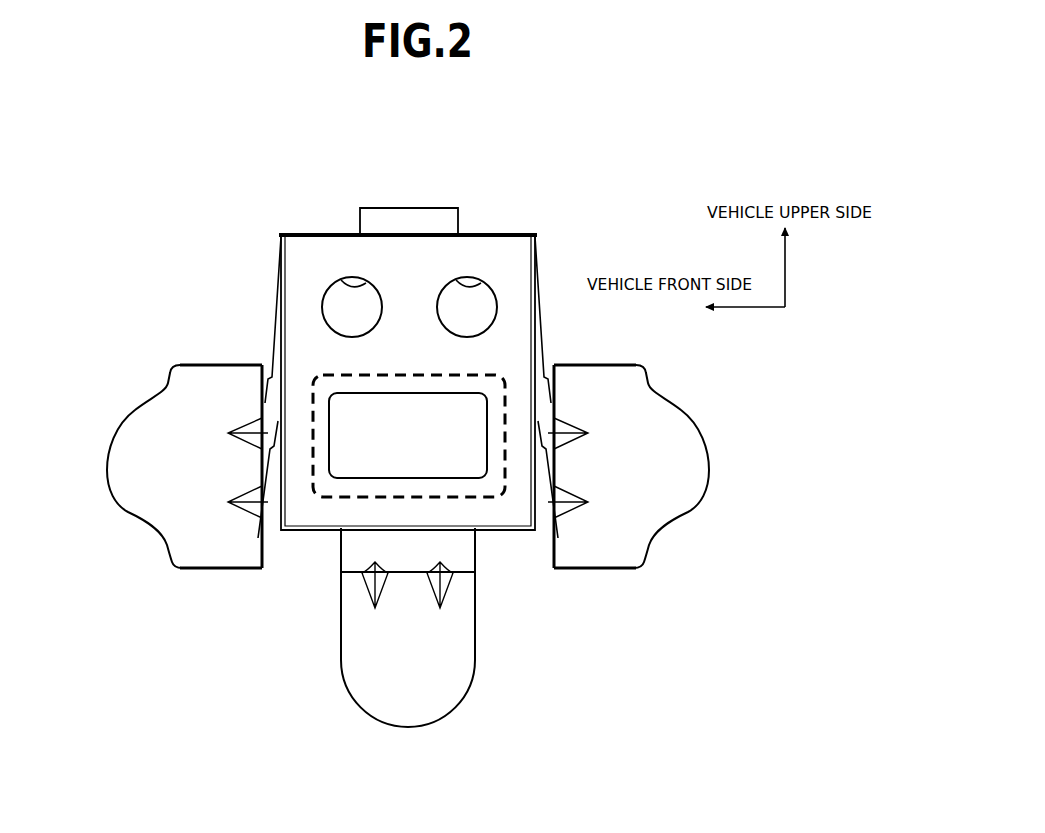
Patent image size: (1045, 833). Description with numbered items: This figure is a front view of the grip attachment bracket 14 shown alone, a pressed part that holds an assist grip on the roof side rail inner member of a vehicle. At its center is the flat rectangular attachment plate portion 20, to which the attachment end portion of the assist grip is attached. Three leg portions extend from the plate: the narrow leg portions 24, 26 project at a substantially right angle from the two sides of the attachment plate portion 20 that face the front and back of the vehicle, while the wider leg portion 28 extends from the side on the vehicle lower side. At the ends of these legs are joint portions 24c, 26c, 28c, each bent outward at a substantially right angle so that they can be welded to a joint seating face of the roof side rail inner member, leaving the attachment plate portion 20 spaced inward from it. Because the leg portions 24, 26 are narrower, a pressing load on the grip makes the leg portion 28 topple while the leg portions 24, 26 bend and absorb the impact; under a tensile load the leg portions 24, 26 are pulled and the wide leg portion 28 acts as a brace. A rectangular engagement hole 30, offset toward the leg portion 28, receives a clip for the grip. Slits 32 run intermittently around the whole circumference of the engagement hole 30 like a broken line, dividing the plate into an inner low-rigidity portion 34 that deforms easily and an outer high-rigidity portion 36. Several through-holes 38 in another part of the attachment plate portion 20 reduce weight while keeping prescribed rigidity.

The grip attachment bracket 14 is at (176, 228).
The attachment plate portion 20 is at (297, 266).
The leg portion 24 is at (263, 411).
The joint portion 24c is at (143, 492).
The leg portion 26 is at (540, 401).
The joint portion 26c is at (660, 505).
The leg portion 28 is at (363, 550).
The joint portion 28c is at (445, 663).
The engagement hole 30 is at (458, 479).
The slits 32 is at (305, 360).
The low-rigidity portion 34 is at (496, 420).
The high-rigidity portion 36 is at (297, 441).
The through-holes 38 is at (353, 283).